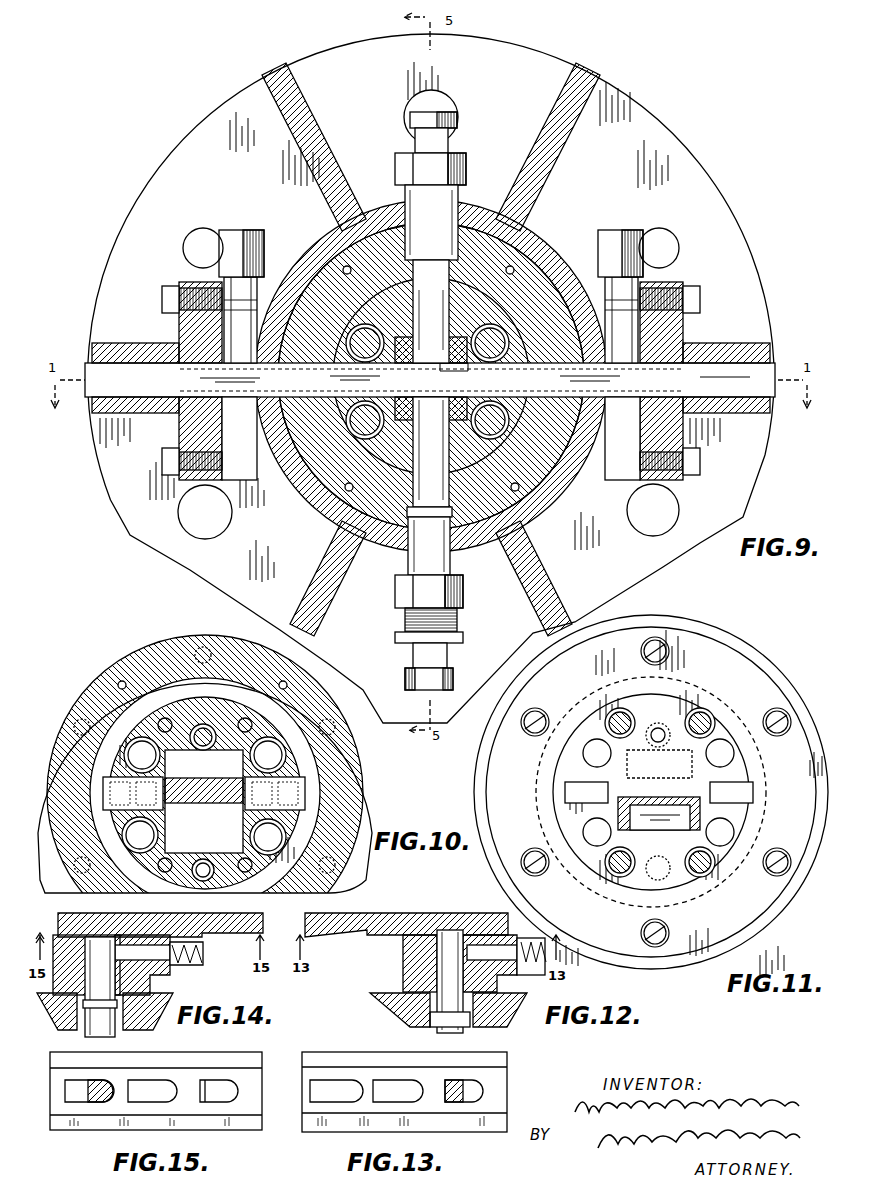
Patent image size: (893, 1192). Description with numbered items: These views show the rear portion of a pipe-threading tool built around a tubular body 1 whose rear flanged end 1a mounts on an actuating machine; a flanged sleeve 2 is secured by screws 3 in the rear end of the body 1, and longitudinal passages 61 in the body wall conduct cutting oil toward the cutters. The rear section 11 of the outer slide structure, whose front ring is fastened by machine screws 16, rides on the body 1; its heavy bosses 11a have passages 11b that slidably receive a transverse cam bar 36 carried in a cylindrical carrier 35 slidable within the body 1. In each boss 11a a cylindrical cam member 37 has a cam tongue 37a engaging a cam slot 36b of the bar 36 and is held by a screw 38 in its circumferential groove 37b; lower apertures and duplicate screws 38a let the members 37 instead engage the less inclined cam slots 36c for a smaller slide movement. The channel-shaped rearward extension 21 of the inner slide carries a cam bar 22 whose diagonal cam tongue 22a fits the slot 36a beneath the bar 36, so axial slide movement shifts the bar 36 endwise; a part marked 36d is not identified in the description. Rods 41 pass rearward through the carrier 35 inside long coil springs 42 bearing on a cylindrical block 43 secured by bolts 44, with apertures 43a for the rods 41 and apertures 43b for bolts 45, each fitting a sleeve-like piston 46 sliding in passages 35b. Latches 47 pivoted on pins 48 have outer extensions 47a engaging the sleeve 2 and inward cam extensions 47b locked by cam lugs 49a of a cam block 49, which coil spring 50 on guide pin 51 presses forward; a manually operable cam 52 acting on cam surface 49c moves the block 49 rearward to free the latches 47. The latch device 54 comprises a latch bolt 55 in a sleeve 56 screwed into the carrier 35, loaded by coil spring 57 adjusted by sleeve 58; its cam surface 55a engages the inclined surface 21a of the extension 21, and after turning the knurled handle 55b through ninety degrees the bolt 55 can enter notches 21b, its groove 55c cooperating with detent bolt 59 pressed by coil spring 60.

In FIG. 9, the tubular body 1 is at (485, 215).
In FIG. 10, the tubular body 1 is at (106, 655).
In FIG. 11, the tubular body 1 is at (738, 640).
In FIG. 14, the tubular body 1 is at (44, 1010).
In FIG. 12, the tubular body 1 is at (380, 1000).
In FIG. 10, the rear flanged end 1a is at (140, 628).
In FIG. 11, the rear flanged end 1a is at (703, 624).
In FIG. 11, the flanged sleeve 2 is at (766, 664).
In FIG. 10, the screws 3 is at (208, 650).
In FIG. 11, the screws 3 is at (658, 638).
In FIG. 9, the rear section 11 is at (363, 202).
In FIG. 9, the bosses 11a is at (150, 340).
In FIG. 9, the passages 11b is at (158, 414).
In FIG. 9, the machine screws 16 is at (624, 442).
In FIG. 9, the rearward extension 21 is at (398, 456).
In FIG. 10, the rearward extension 21 is at (56, 892).
In FIG. 11, the rearward extension 21 is at (670, 906).
In FIG. 14, the rearward extension 21 is at (62, 910).
In FIG. 15, the rearward extension 21 is at (240, 1132).
In FIG. 12, the rearward extension 21 is at (382, 913).
In FIG. 13, the rearward extension 21 is at (320, 1132).
In FIG. 14, the inclined surface 21a is at (214, 936).
In FIG. 15, the inclined surface 21a is at (216, 1080).
In FIG. 12, the inclined surface 21a is at (466, 930).
In FIG. 13, the inclined surface 21a is at (471, 1080).
In FIG. 14, the notches 21b is at (64, 918).
In FIG. 15, the notches 21b is at (84, 1080).
In FIG. 12, the notches 21b is at (418, 913).
In FIG. 13, the notches 21b is at (330, 1080).
In FIG. 9, the cam bar 22 is at (400, 392).
In FIG. 11, the cam bar 22 is at (650, 880).
In FIG. 9, the cam tongue 22a is at (448, 392).
In FIG. 11, the cam tongue 22a is at (690, 860).
In FIG. 9, the carrier 35 is at (386, 266).
In FIG. 10, the carrier 35 is at (170, 640).
In FIG. 14, the carrier 35 is at (170, 990).
In FIG. 12, the carrier 35 is at (520, 985).
In FIG. 9, the passages 35b is at (510, 288).
In FIG. 10, the passages 35b is at (122, 830).
In FIG. 9, the cam bar 36 is at (338, 366).
In FIG. 11, the cam bar 36 is at (659, 764).
In FIG. 11, the slot 36a is at (600, 860).
In FIG. 9, the cam slots 36b is at (316, 344).
In FIG. 9, the cam slots 36c is at (306, 440).
In FIG. 9, the key 36d is at (474, 384).
In FIG. 9, the cylindrical cam member 37 is at (663, 322).
In FIG. 9, the cam tongue 37a is at (628, 304).
In FIG. 9, the circumferential grooves 37b is at (650, 262).
In FIG. 9, the screws 38 is at (691, 288).
In FIG. 9, the securing screws 38a is at (702, 466).
In FIG. 9, the rods 41 is at (386, 308).
In FIG. 9, the coil spring 42 is at (356, 332).
In FIG. 10, the coil spring 42 is at (114, 728).
In FIG. 11, the cylindrical block 43 is at (692, 700).
In FIG. 11, the apertures 43a is at (590, 835).
In FIG. 11, the apertures 43b is at (586, 722).
In FIG. 10, the bolts 44 is at (126, 690).
In FIG. 11, the bolts 44 is at (714, 700).
In FIG. 9, the bolts 45 is at (458, 312).
In FIG. 9, the sleeve-like piston 46 is at (492, 328).
In FIG. 10, the latches 47 is at (102, 784).
In FIG. 11, the latches 47 is at (565, 790).
In FIG. 10, the outer latch extension 47a is at (102, 800).
In FIG. 11, the outer latch extension 47a is at (570, 798).
In FIG. 10, the cam extension 47b is at (164, 818).
In FIG. 11, the cam extension 47b is at (610, 712).
In FIG. 11, the pins 48 is at (561, 750).
In FIG. 9, the cam block 49 is at (403, 336).
In FIG. 10, the cam block 49 is at (182, 772).
In FIG. 11, the cam block 49 is at (659, 792).
In FIG. 10, the cam lugs 49a is at (198, 802).
In FIG. 11, the cam lugs 49a is at (590, 810).
In FIG. 9, the cam surface 49c is at (448, 336).
In FIG. 10, the coil spring 50 is at (215, 728).
In FIG. 11, the coil spring 50 is at (631, 692).
In FIG. 10, the guide pin 51 is at (202, 722).
In FIG. 11, the guide pin 51 is at (660, 720).
In FIG. 9, the manually operable cam 52 is at (470, 270).
In FIG. 9, the latch device 54 is at (405, 577).
In FIG. 14, the latch device 54 is at (140, 1016).
In FIG. 12, the latch device 54 is at (500, 1020).
In FIG. 9, the latch bolt 55 is at (408, 500).
In FIG. 14, the latch bolt 55 is at (82, 974).
In FIG. 15, the latch bolt 55 is at (96, 1102).
In FIG. 12, the latch bolt 55 is at (465, 1005).
In FIG. 13, the latch bolt 55 is at (378, 1085).
In FIG. 9, the cam surface 55a is at (446, 440).
In FIG. 15, the cam surface 55a is at (90, 1104).
In FIG. 12, the cam surface 55a is at (438, 946).
In FIG. 13, the cam surface 55a is at (401, 1104).
In FIG. 9, the knurled handle 55b is at (404, 680).
In FIG. 9, the groove 55c is at (448, 460).
In FIG. 14, the groove 55c is at (86, 959).
In FIG. 15, the groove 55c is at (73, 1102).
In FIG. 12, the groove 55c is at (408, 962).
In FIG. 13, the groove 55c is at (464, 1101).
In FIG. 9, the sleeve 56 is at (456, 570).
In FIG. 14, the sleeve 56 is at (74, 1035).
In FIG. 12, the sleeve 56 is at (430, 1030).
In FIG. 14, the coil spring 57 is at (113, 1025).
In FIG. 12, the coil spring 57 is at (470, 1030).
In FIG. 9, the adjustable sleeve 58 is at (402, 620).
In FIG. 14, the detent bolt 59 is at (144, 974).
In FIG. 12, the detent bolt 59 is at (480, 971).
In FIG. 14, the coil spring 60 is at (170, 932).
In FIG. 12, the coil spring 60 is at (526, 944).
In FIG. 10, the longitudinal passages 61 is at (92, 688).